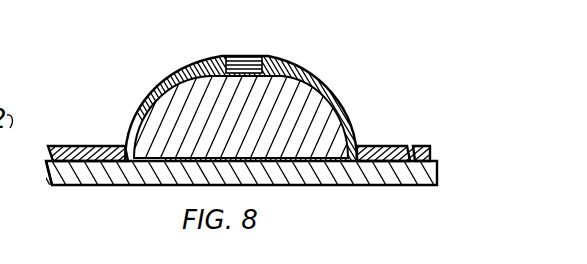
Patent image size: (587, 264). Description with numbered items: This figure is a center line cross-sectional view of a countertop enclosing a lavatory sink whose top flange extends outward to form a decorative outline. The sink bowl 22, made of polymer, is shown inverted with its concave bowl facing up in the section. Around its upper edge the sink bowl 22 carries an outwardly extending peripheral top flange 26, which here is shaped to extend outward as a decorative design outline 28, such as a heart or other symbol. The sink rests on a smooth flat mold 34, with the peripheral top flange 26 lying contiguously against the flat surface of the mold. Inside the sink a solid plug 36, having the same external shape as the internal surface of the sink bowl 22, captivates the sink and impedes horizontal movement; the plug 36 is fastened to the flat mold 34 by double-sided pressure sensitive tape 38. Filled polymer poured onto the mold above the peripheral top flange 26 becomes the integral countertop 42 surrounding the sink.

The sink bowl 22 is at (183, 70).
The peripheral top flange 26 is at (113, 186).
The decorative design outline 28 is at (414, 145).
The flat mold 34 is at (158, 186).
The plug 36 is at (295, 110).
The double-sided pressure sensitive tape 38 is at (297, 186).
The countertop 42 is at (86, 146).